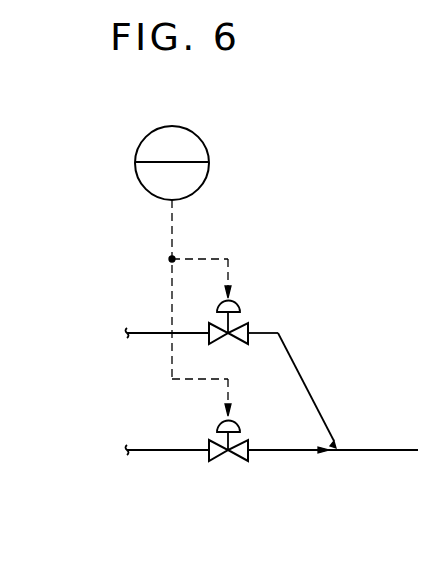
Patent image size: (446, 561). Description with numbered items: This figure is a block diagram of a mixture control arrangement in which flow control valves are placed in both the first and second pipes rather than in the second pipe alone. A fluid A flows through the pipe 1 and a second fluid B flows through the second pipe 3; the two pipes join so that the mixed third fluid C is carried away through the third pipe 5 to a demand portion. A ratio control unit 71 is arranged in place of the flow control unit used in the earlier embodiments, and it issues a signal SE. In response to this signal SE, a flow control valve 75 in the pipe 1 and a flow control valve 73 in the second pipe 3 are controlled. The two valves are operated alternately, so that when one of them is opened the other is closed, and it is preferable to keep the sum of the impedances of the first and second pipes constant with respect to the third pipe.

The ratio control unit 71 is at (199, 136).
The signal SE is at (174, 231).
The flow control valve 73 is at (239, 305).
The second pipe 3 is at (260, 331).
The flow control valve 75 is at (236, 461).
The pipe 1 is at (300, 452).
The third pipe 5 is at (370, 452).